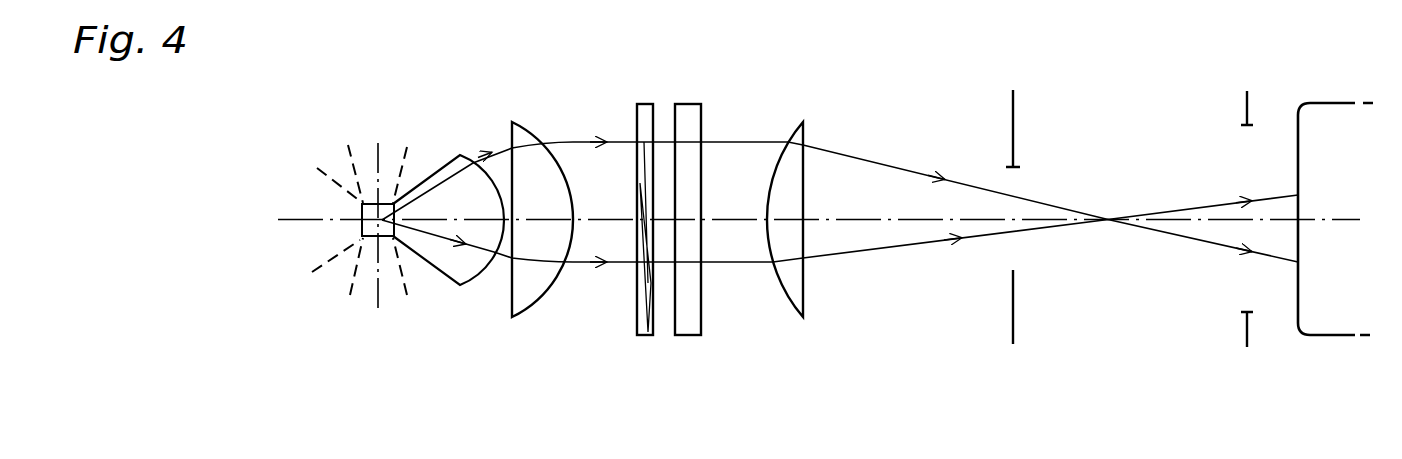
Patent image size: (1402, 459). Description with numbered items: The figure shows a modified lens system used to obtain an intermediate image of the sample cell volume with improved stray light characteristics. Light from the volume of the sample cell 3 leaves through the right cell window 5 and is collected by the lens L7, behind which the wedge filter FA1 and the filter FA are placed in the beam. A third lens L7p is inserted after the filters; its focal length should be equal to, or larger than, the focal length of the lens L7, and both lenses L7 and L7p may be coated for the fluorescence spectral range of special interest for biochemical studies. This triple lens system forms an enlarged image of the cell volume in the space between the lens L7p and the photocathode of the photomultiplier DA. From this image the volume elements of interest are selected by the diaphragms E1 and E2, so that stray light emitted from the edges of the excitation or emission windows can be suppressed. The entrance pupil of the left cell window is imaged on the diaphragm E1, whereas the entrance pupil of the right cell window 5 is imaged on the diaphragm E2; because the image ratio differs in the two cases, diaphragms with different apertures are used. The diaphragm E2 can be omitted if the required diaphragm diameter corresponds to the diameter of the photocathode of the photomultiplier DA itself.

The sample cell 3 is at (359, 222).
The right cell window 5 is at (453, 160).
The lens L7 is at (537, 189).
The filter F'A FA1 is at (639, 193).
The filter FA is at (689, 195).
The third lens L7' L7p is at (797, 187).
The diaphragm E1 is at (1018, 200).
The diaphragm E2 is at (1252, 201).
The photomultiplier DA is at (1335, 219).